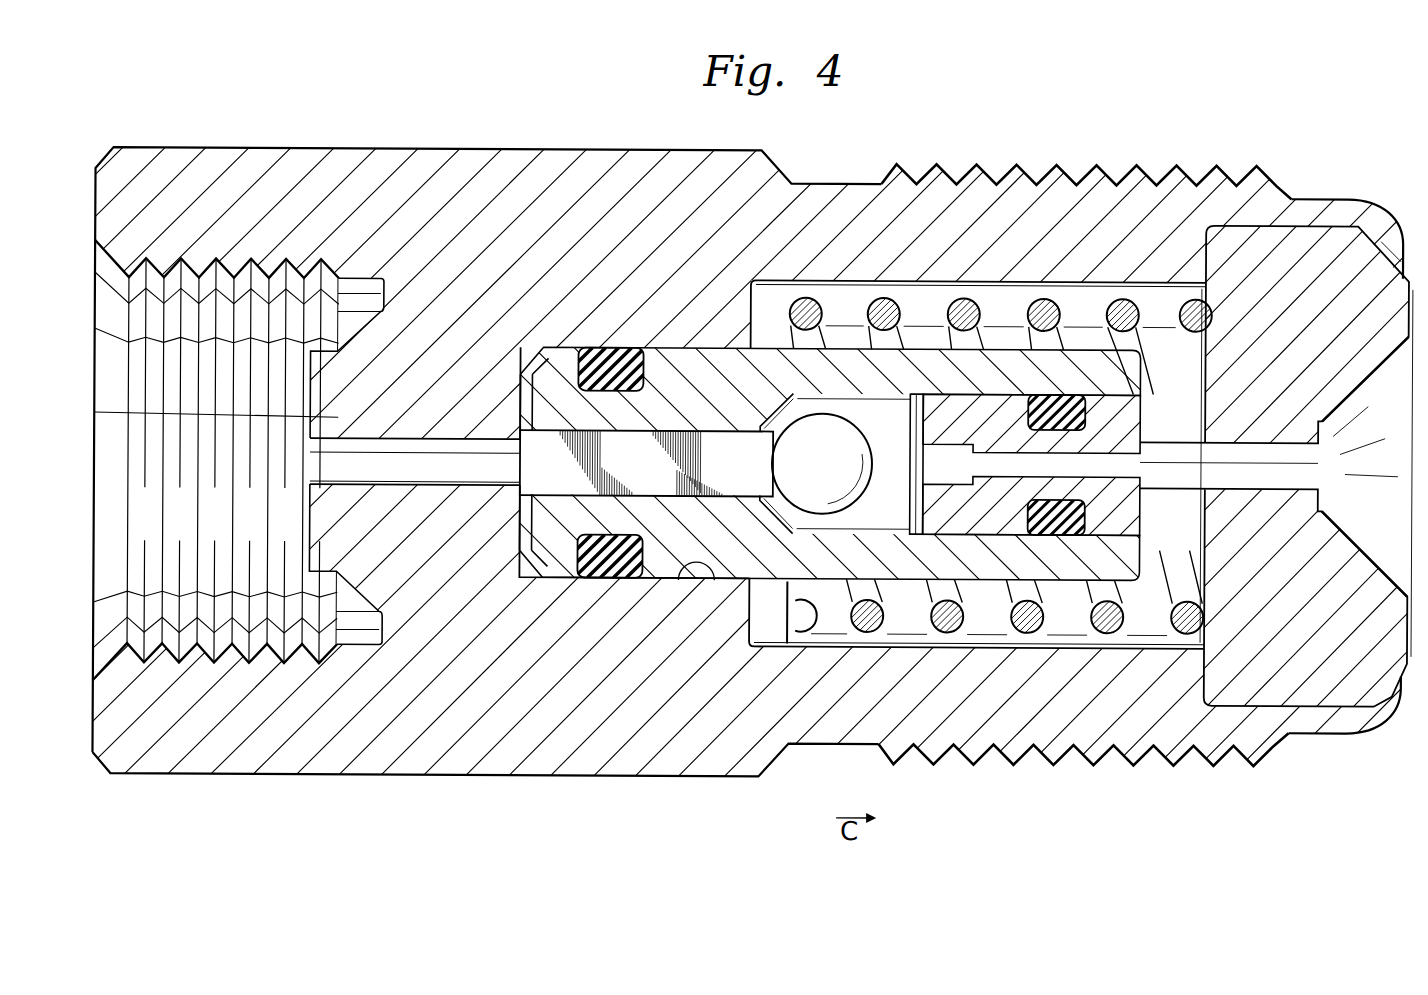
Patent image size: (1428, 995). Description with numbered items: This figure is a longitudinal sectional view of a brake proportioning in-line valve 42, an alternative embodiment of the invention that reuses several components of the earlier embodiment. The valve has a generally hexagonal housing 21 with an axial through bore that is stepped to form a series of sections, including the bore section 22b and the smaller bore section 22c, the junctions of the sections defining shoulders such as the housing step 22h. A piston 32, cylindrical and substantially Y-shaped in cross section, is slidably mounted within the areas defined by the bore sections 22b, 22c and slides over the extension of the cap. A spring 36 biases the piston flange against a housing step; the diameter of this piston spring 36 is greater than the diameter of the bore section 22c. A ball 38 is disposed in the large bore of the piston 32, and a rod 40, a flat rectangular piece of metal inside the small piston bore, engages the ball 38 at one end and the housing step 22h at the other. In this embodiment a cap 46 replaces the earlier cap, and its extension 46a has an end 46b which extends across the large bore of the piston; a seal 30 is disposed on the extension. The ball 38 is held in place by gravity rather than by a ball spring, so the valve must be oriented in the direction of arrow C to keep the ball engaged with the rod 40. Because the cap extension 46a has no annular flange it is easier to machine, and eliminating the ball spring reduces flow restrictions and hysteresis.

The housing 21 is at (553, 266).
The bore section 22b is at (990, 634).
The bore section 22c is at (700, 579).
The housing step 22h is at (537, 560).
The seal 30 is at (1057, 393).
The piston 32 is at (719, 393).
The spring 36 is at (851, 587).
The ball 38 is at (832, 466).
The rod 40 is at (654, 472).
The brake proportioning in-line valve 42 is at (1331, 158).
The cap 46 is at (1305, 312).
The extension 46a is at (1100, 392).
The end 46b is at (906, 418).